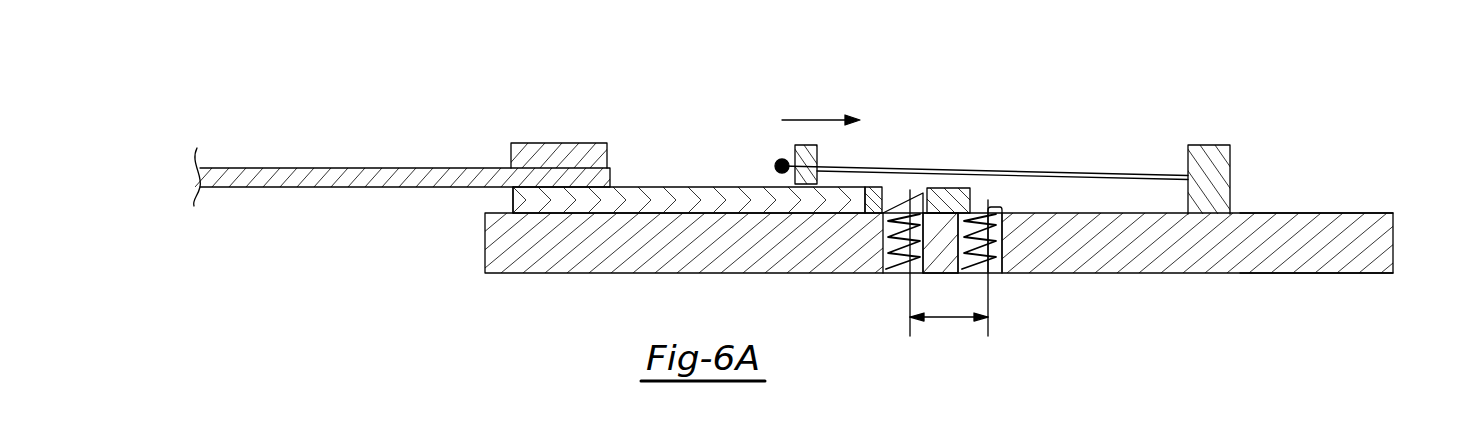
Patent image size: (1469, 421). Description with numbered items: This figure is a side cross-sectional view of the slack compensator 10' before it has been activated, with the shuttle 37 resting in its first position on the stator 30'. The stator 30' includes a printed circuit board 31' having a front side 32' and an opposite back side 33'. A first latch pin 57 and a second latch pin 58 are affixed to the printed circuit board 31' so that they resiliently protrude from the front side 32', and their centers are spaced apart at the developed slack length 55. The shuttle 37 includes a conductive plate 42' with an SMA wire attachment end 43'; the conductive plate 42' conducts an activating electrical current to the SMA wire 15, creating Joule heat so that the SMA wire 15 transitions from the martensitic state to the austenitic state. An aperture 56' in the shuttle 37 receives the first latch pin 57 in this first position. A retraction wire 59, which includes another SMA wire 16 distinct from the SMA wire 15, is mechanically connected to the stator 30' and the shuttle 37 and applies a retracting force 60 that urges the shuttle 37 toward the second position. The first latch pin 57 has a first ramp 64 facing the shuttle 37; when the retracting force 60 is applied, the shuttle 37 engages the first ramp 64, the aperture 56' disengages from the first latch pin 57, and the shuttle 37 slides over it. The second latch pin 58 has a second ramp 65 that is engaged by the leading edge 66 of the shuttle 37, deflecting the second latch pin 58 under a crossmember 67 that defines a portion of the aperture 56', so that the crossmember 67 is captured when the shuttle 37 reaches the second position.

The slack compensator 10' is at (809, 197).
The SMA wire 15 is at (335, 168).
The other SMA wire 16 is at (1098, 173).
The stator 30' is at (944, 274).
The printed circuit board 31' is at (944, 274).
The front side 32' is at (1316, 182).
The back side 33' is at (1316, 307).
The shuttle 37 is at (685, 164).
The conductive plate 42' is at (685, 164).
The SMA wire attachment end 43' is at (465, 214).
The developed slack length 55 is at (949, 268).
The aperture 56' is at (872, 172).
The first latch pin 57 is at (906, 193).
The second latch pin 58 is at (1001, 212).
The retraction wire 59 is at (1140, 174).
The retracting force 60 is at (816, 118).
The first ramp 64 is at (883, 216).
The second ramp 65 is at (987, 207).
The leading edge 66 is at (975, 196).
The crossmember 67 is at (955, 194).